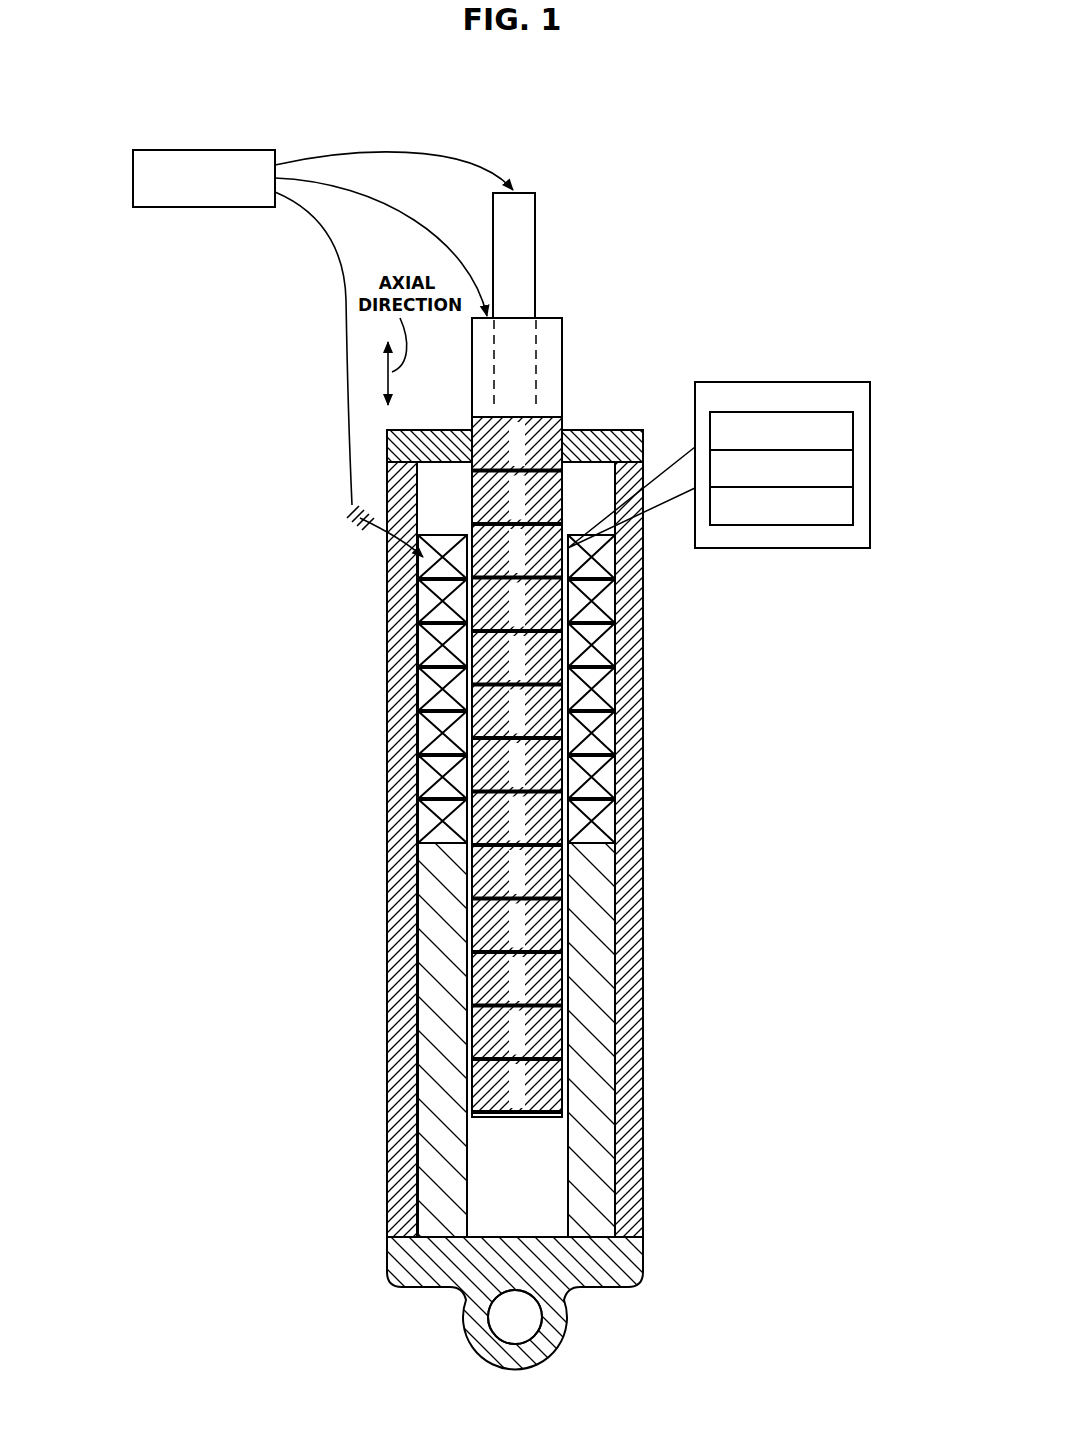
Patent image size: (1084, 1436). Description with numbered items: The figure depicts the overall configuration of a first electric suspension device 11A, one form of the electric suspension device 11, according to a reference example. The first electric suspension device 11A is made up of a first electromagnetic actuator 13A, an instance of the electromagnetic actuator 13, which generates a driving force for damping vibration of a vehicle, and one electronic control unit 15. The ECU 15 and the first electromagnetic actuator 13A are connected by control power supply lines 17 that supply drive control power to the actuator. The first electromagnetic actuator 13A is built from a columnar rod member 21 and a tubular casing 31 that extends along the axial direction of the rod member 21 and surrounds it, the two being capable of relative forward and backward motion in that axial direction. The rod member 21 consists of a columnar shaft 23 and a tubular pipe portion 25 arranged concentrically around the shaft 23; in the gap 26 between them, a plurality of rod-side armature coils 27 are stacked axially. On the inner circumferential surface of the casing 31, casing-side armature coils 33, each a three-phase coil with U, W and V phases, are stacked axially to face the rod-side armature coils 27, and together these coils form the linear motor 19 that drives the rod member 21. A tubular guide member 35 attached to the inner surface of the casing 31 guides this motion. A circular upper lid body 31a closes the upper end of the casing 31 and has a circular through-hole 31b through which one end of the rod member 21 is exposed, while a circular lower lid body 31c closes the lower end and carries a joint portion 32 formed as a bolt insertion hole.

The electric suspension device 11 is at (688, 258).
The first electric suspension device 11A is at (590, 741).
The electromagnetic actuator 13 is at (580, 404).
The first electromagnetic actuator 13A is at (500, 622).
The electronic control unit 15 is at (250, 150).
The control power supply lines 17 is at (350, 270).
The linear motor 19 is at (445, 860).
The rod member 21 is at (561, 622).
The shaft 23 is at (537, 245).
The pipe portion 25 is at (562, 358).
The gap 26 is at (545, 318).
The rod-side armature coils 27 is at (478, 640).
The casing 31 is at (574, 864).
The upper lid body 31a is at (617, 430).
The through-hole 31b is at (476, 432).
The lower lid body 31c is at (640, 1262).
The joint portion 32 is at (518, 1330).
The casing-side armature coils 33 is at (780, 382).
The guide member 35 is at (600, 937).